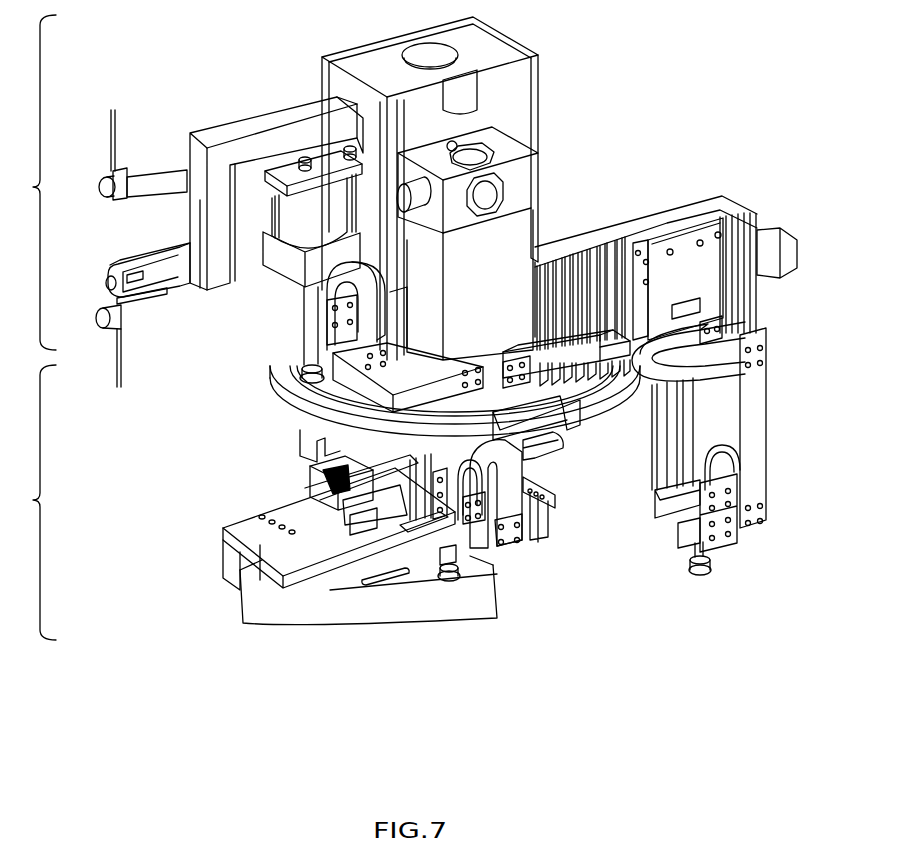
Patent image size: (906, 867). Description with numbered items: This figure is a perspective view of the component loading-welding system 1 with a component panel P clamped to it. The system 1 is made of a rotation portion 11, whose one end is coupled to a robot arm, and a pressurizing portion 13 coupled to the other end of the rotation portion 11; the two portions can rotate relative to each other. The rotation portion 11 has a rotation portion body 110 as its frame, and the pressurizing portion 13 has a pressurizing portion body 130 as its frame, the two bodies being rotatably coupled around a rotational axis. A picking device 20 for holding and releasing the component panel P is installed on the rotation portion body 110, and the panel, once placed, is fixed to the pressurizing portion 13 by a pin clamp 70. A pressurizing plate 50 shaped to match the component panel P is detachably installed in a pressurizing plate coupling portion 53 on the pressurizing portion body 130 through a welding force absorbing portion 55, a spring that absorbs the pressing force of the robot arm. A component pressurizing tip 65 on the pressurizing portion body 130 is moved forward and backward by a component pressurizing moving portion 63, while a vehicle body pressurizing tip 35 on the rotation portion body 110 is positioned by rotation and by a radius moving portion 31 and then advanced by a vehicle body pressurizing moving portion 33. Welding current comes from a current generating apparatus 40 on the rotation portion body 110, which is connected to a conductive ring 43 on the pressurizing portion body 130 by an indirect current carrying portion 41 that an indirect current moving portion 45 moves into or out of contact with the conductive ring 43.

The component loading-welding system 1 is at (736, 62).
The rotation portion 11 is at (31, 182).
The pressurizing portion 13 is at (31, 502).
The picking device 20 is at (167, 172).
The rotation portion body 110 is at (516, 97).
The current generating apparatus 40 is at (518, 238).
The radius moving portion 31 is at (690, 262).
The indirect current moving portion 45 is at (288, 226).
The indirect current carrying portion 41 is at (352, 307).
The conductive ring 43 is at (300, 388).
The welding force absorbing portion 55 is at (330, 478).
The pressurizing plate 50 is at (300, 528).
The pressurizing plate coupling portion 53 is at (365, 497).
The component panel P is at (345, 600).
The component pressurizing moving portion 63 is at (420, 523).
The pin clamp 70 is at (434, 580).
The component pressurizing tip 65 is at (505, 548).
The pressurizing portion body 130 is at (576, 412).
The vehicle body pressurizing moving portion 33 is at (675, 433).
The vehicle body pressurizing tip 35 is at (701, 578).